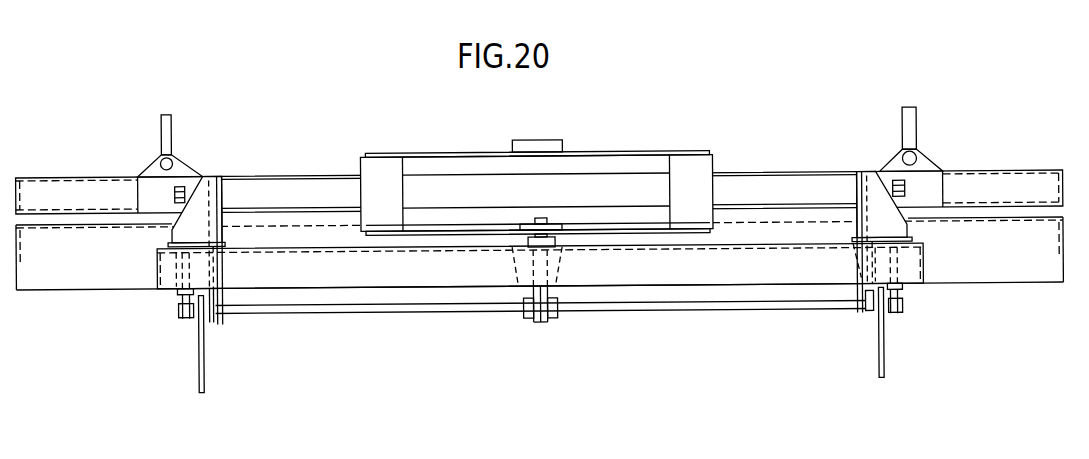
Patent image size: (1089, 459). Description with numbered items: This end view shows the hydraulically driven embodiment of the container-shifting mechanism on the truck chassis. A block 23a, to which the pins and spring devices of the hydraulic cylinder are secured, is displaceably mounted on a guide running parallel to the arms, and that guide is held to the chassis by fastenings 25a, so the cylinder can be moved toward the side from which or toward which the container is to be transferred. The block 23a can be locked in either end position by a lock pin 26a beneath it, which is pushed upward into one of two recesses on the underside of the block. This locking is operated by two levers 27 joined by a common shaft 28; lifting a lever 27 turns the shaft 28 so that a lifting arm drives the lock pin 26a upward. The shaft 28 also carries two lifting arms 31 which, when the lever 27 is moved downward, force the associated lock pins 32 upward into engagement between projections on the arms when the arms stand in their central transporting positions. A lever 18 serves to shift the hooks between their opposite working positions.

The lever 18 is at (162, 126).
The block 23a is at (420, 168).
The fastenings 25a is at (201, 184).
The lock pin 26a is at (550, 242).
The levers 27 is at (198, 380).
The shaft 28 is at (324, 312).
The lifting arms 31 is at (185, 324).
The lock pins 32 is at (181, 265).